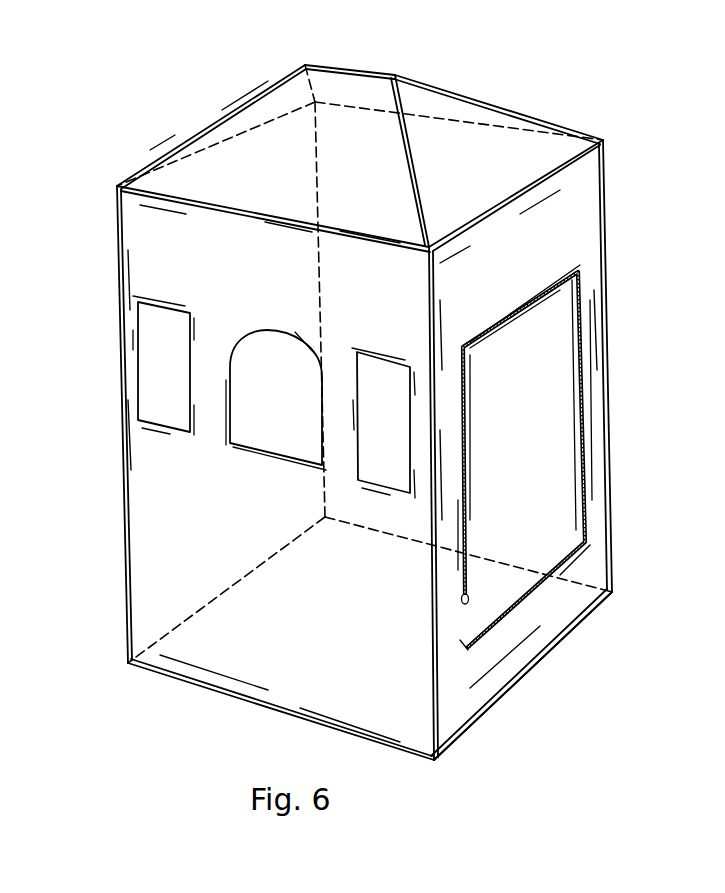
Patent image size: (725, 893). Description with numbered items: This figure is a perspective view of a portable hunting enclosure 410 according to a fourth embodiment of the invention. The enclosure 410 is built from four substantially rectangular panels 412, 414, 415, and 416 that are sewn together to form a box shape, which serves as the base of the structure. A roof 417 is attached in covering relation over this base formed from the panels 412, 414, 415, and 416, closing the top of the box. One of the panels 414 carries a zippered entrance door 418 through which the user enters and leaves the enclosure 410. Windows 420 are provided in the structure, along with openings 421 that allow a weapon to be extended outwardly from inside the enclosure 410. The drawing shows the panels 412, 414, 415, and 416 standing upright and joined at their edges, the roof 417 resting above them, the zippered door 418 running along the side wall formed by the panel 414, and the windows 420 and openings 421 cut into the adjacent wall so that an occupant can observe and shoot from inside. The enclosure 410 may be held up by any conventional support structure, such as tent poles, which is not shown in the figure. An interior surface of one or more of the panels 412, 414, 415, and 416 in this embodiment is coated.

The enclosure 410 is at (146, 98).
The panel 412 is at (250, 617).
The panel 414 is at (543, 227).
The panel 415 is at (592, 567).
The panel 416 is at (172, 498).
The roof 417 is at (218, 178).
The zippered entrance door 418 is at (542, 353).
The window 420 is at (231, 347).
The opening 421 is at (137, 376).